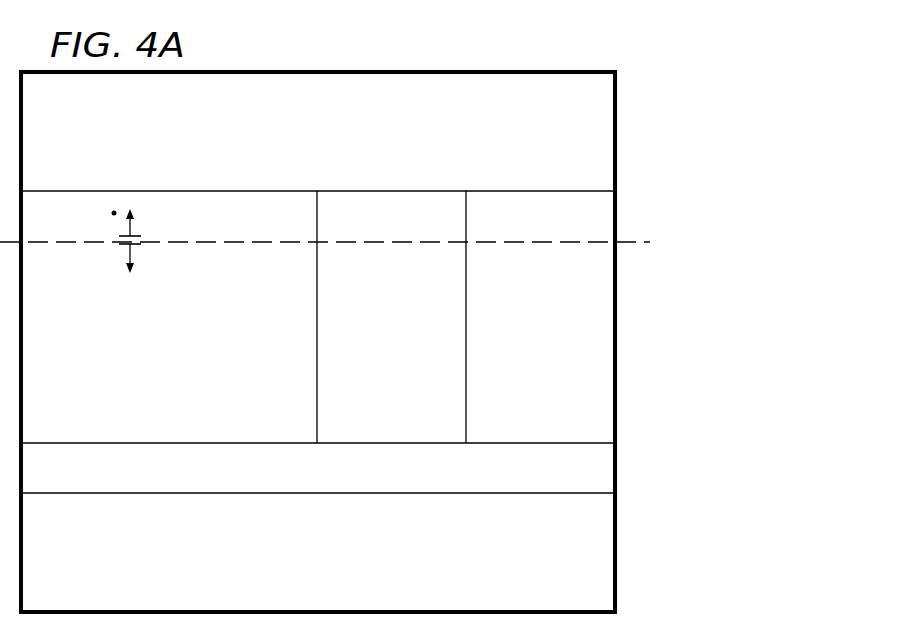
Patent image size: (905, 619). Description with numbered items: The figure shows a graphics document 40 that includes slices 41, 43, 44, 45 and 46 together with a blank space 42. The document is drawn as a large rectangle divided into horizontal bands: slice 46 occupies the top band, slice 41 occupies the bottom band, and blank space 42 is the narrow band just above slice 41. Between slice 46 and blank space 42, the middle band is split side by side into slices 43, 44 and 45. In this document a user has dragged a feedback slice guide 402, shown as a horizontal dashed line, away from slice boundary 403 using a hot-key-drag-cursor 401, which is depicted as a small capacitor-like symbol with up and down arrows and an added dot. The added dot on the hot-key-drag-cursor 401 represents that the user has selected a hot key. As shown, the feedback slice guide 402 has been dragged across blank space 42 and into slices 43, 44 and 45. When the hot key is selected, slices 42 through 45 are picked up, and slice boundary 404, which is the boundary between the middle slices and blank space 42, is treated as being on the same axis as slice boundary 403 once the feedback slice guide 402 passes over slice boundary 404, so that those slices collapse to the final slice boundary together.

The graphics document 40 is at (495, 59).
The slice 41 is at (331, 566).
The blank space 42 is at (331, 480).
The slice 43 is at (182, 356).
The slice 44 is at (405, 356).
The slice 45 is at (555, 356).
The slice 46 is at (334, 152).
The hot-key-drag-cursor 401 is at (121, 250).
The feedback slice guide 402 is at (545, 243).
The slice boundary 403 is at (544, 493).
The slice boundary 404 is at (544, 443).